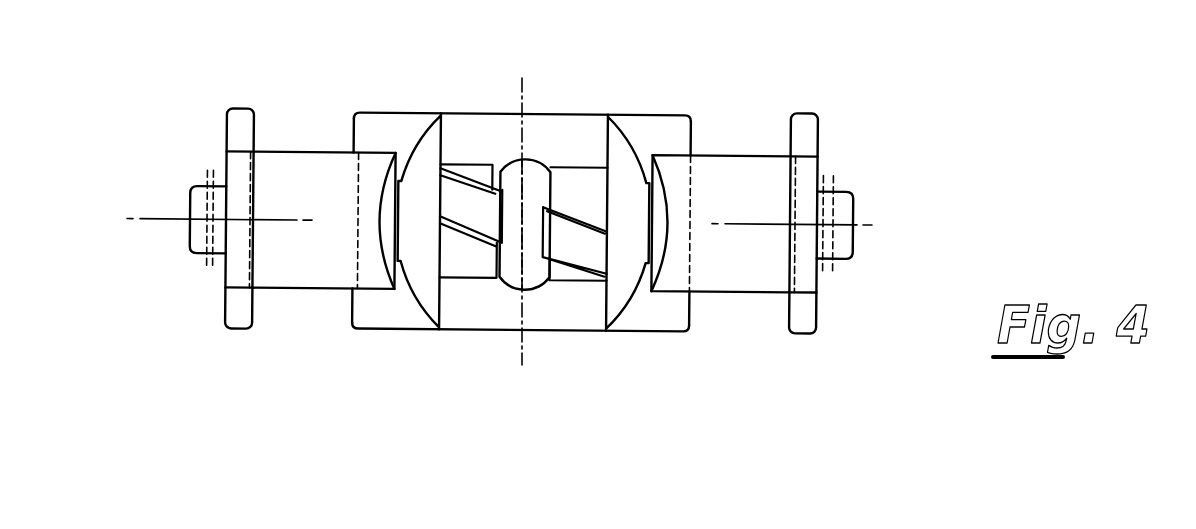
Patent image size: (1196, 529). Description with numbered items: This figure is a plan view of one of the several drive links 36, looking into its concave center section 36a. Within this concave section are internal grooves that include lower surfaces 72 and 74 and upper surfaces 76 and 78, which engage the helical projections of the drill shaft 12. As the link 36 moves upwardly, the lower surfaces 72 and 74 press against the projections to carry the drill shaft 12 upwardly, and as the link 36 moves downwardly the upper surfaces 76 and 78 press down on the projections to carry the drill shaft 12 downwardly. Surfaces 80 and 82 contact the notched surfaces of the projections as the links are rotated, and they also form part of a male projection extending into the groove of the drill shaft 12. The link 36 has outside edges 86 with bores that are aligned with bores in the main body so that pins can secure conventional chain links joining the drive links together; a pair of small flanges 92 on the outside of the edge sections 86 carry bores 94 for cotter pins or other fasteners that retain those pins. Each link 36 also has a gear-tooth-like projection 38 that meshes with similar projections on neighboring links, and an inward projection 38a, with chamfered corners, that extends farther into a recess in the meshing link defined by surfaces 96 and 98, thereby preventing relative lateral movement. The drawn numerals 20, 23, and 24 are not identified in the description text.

The drill shaft 12 is at (531, 0).
The coupling assembly 20 is at (790, 170).
The parting line 23 is at (357, 172).
The shaft end 24 is at (243, 177).
The drive link 36 is at (393, 335).
The concave center section 36a is at (620, 150).
The projection 38 is at (807, 280).
The inward projection 38a is at (315, 263).
The lower surface 72 is at (552, 282).
The lower surface 74 is at (492, 195).
The upper surface 76 is at (545, 235).
The upper surface 78 is at (492, 195).
The contact surface 80 is at (520, 255).
The contact surface 82 is at (523, 255).
The outside edge 86 is at (235, 305).
The small flange 92 is at (190, 202).
The bore 94 is at (210, 255).
The recess surface 96 is at (350, 135).
The recess surface 98 is at (257, 128).